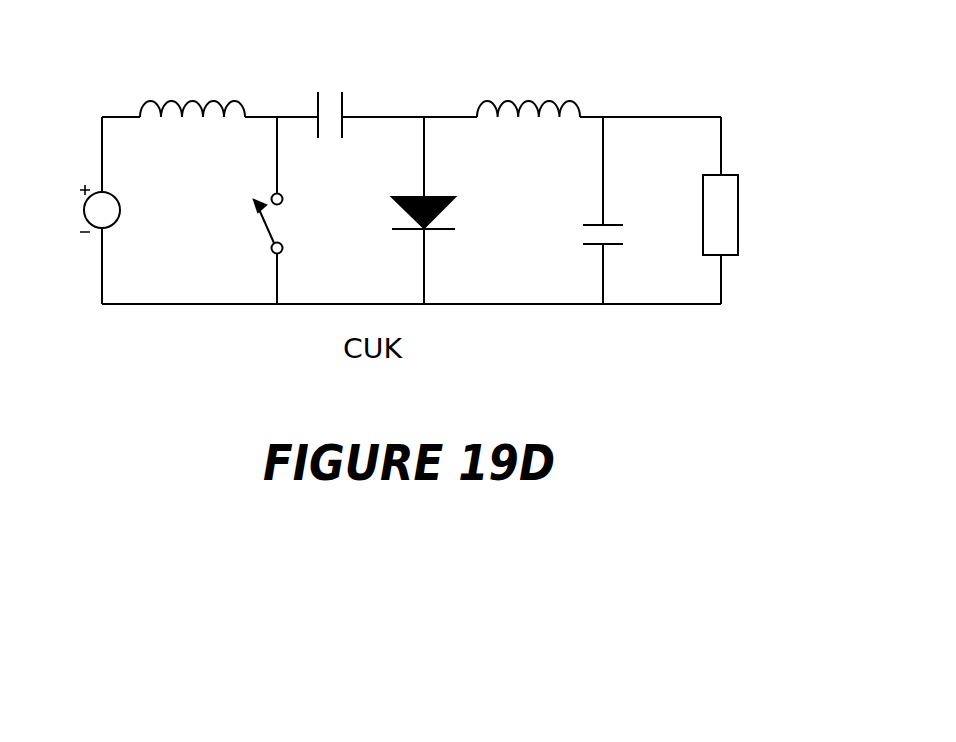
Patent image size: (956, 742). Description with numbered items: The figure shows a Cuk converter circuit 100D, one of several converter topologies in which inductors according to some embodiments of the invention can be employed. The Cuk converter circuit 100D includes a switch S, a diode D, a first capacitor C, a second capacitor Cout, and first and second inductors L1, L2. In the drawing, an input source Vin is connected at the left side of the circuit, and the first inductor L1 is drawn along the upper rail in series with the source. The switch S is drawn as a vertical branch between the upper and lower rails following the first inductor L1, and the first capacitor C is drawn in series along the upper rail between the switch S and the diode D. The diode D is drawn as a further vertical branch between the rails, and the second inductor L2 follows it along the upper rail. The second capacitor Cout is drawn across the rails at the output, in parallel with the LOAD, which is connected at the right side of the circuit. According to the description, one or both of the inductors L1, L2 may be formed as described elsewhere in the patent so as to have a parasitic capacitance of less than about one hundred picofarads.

The Cuk converter circuit 100D is at (705, 92).
The first inductor L1 is at (192, 92).
The first capacitor C is at (346, 106).
The second inductor L2 is at (528, 93).
The input voltage source Vin is at (81, 208).
The switch S is at (244, 224).
The diode D is at (444, 213).
The second capacitor Cout is at (576, 218).
The load LOAD is at (763, 215).